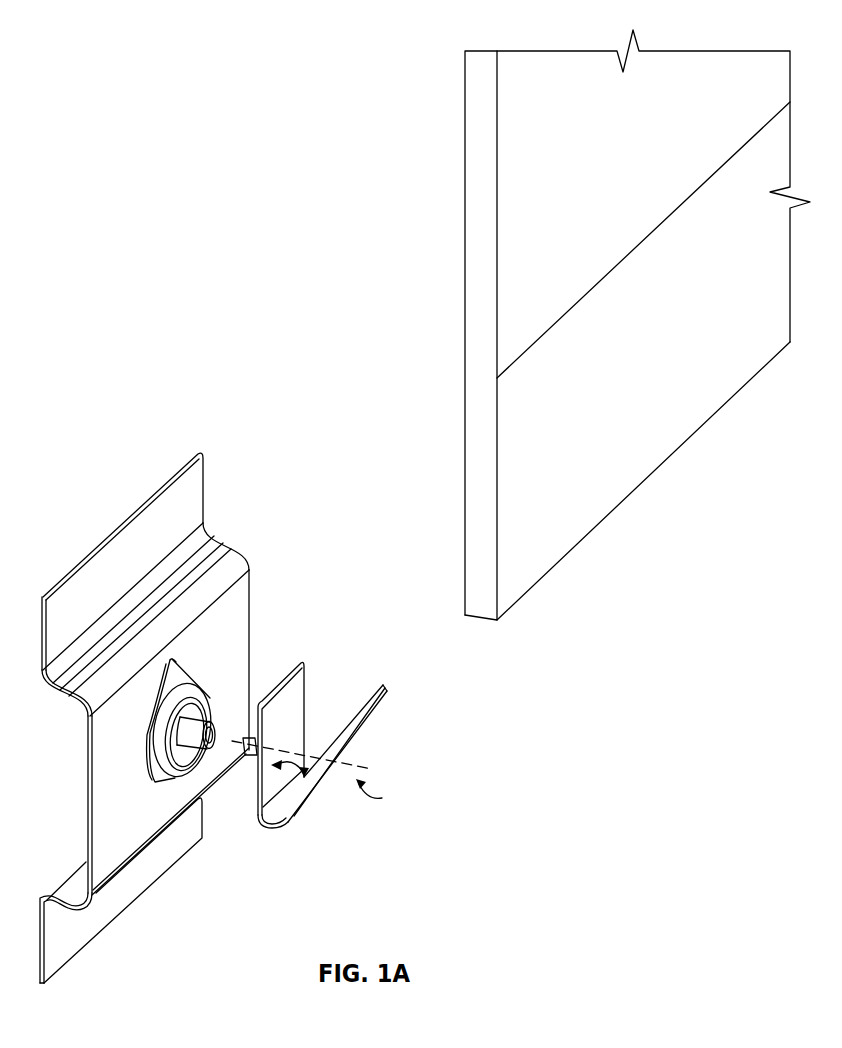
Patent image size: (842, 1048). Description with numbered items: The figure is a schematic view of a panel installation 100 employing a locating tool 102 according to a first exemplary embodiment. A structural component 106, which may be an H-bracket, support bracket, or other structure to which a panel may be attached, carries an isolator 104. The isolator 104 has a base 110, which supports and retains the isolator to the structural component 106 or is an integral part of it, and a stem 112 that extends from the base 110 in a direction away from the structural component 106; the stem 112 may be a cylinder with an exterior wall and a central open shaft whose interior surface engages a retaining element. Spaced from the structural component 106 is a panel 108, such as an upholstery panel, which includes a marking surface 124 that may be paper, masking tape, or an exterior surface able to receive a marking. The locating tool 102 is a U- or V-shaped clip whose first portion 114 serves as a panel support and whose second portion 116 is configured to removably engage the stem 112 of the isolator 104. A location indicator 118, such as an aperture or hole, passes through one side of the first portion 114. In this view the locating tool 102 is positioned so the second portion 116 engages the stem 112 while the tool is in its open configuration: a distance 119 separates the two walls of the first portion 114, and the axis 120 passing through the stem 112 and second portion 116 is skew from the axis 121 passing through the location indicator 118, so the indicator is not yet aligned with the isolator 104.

The panel installation 100 is at (153, 259).
The locating tool 102 is at (352, 605).
The isolator 104 is at (152, 700).
The structural component 106 is at (120, 527).
The panel 108 is at (599, 325).
The base 110 is at (158, 748).
The stem 112 is at (197, 722).
The first portion 114 is at (387, 686).
The second portion 116 is at (258, 770).
The location indicator 118 is at (364, 740).
The distance 119 is at (298, 790).
The axis 120 is at (236, 741).
The axis 121 is at (388, 797).
The marking surface 124 is at (647, 402).